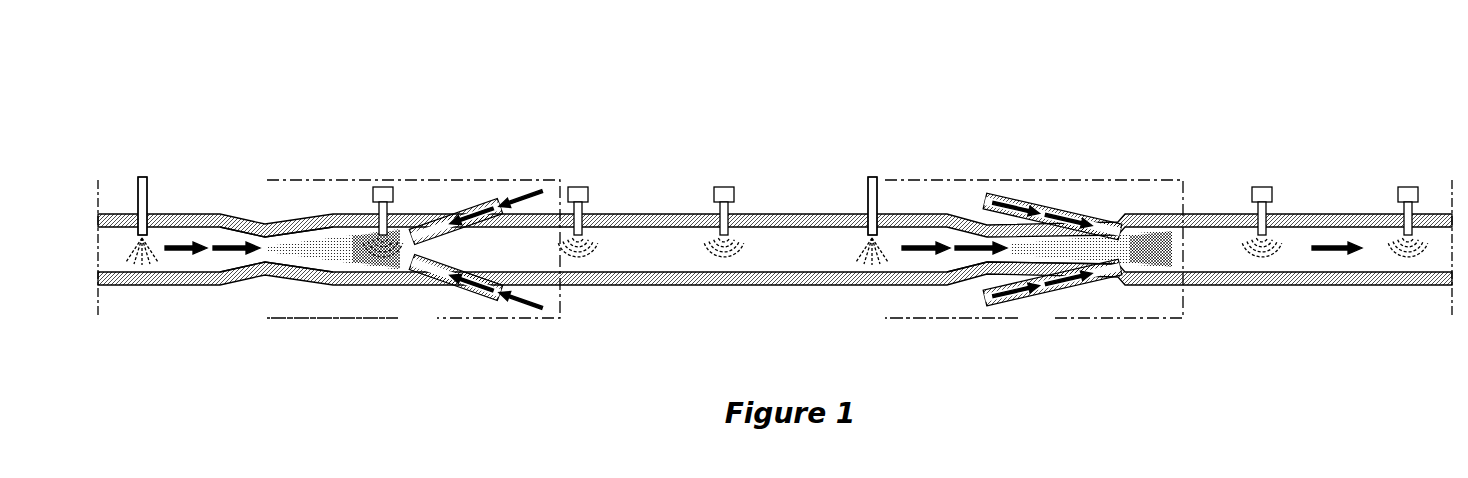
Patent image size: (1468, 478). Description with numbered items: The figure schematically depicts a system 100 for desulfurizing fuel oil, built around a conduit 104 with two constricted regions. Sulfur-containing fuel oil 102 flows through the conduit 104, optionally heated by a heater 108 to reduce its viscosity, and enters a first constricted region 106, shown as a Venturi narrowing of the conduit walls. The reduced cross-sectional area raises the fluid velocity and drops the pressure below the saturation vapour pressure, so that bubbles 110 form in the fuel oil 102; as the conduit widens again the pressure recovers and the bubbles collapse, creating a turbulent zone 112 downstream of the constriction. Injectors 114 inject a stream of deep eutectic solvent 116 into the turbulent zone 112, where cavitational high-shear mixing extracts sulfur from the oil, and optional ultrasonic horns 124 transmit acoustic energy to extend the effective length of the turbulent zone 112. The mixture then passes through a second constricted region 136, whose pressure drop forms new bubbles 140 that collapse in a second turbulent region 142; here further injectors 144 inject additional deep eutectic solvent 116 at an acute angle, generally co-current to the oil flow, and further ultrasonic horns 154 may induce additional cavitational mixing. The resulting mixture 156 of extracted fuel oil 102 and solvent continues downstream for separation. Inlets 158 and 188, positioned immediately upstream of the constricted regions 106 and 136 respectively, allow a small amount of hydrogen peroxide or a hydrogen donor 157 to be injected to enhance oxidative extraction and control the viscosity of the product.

The system for desulfurizing fuel oil 100 is at (268, 56).
The sulfur-containing fuel oil 102 is at (224, 246).
The conduit 104 is at (132, 285).
The constricted region 106 is at (265, 275).
The heater 108 is at (197, 285).
The bubbles 110 is at (300, 246).
The turbulent zone 112 is at (363, 242).
The injectors 114 is at (517, 212).
The deep eutectic solvent 116 is at (573, 311).
The ultrasonic horns 124 is at (384, 192).
The second constricted region 136 is at (987, 274).
The bubbles 140 is at (1107, 246).
The second turbulent region 142 is at (1163, 246).
The injectors 144 is at (1013, 200).
The ultrasonic horns 154 is at (1259, 190).
The mixture 156 is at (1316, 246).
The hydrogen donor 157 is at (507, 153).
The inlet 158 is at (137, 197).
The inlet 188 is at (866, 197).